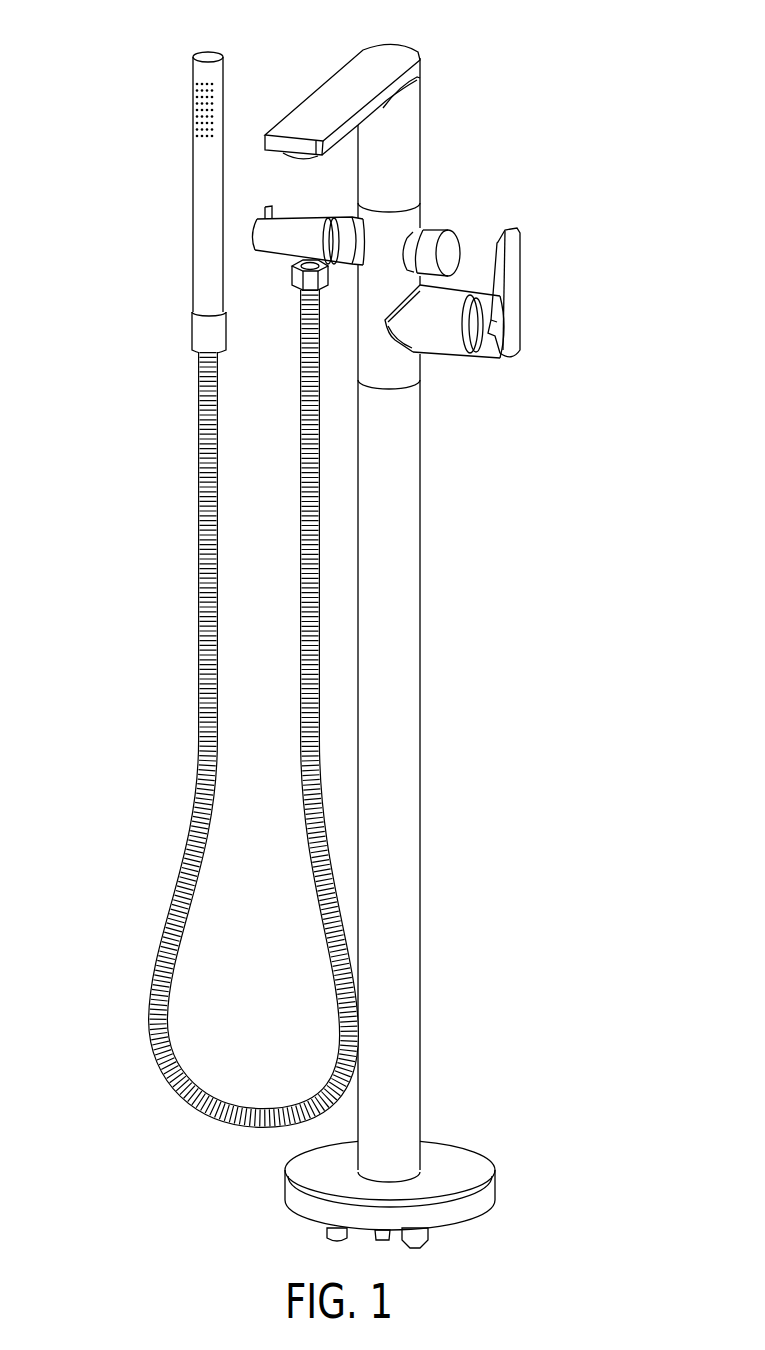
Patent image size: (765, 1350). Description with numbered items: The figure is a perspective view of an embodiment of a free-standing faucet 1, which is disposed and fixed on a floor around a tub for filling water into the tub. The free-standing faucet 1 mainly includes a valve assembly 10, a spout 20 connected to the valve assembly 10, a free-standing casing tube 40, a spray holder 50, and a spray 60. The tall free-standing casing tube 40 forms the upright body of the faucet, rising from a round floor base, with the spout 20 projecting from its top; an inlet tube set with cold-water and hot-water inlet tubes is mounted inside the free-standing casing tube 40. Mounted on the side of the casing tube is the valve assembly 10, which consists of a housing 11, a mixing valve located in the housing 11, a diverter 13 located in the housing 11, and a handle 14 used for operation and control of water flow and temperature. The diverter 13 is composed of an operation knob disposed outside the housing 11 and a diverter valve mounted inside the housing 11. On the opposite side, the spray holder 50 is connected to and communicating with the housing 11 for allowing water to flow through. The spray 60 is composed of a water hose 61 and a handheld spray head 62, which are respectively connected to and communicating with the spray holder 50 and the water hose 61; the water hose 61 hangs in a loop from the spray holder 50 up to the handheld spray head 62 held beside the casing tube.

The free-standing faucet 1 is at (502, 642).
The valve assembly 10 is at (527, 320).
The housing 11 is at (445, 342).
The diverter 13 is at (448, 229).
The handle 14 is at (517, 270).
The spout 20 is at (312, 90).
The free-standing casing tube 40 is at (422, 777).
The spray holder 50 is at (273, 257).
The spray 60 is at (103, 280).
The water hose 61 is at (199, 414).
The handheld spray head 62 is at (193, 292).